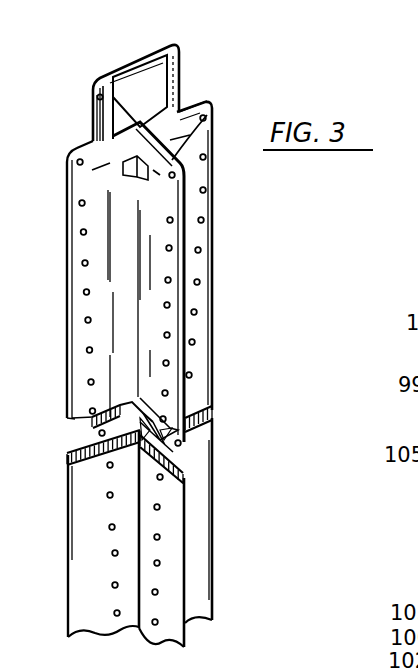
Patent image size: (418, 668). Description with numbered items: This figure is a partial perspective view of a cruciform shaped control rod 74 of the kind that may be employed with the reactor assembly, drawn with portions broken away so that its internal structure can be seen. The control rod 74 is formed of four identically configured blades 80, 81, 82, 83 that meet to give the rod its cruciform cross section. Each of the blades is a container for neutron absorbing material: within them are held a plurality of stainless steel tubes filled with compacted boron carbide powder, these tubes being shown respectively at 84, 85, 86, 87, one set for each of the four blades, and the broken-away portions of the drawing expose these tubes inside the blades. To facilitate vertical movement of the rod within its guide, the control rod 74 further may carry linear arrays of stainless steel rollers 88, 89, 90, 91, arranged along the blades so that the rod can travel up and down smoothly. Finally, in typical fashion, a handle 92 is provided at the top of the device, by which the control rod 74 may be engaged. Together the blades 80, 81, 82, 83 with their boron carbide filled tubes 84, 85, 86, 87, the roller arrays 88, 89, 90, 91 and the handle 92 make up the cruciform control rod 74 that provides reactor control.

The cruciform control rod 74 is at (257, 267).
The blade 80 is at (205, 119).
The blade 81 is at (83, 191).
The blade 82 is at (97, 115).
The blade 83 is at (190, 100).
The compacted boron carbide powder filled stainless steel tubes 84 is at (184, 474).
The compacted boron carbide powder filled stainless steel tubes 85 is at (68, 458).
The compacted boron carbide powder filled stainless steel tubes 86 is at (83, 427).
The compacted boron carbide powder filled stainless steel tubes 87 is at (213, 408).
The linear array of stainless steel rollers 88 is at (173, 225).
The linear array of stainless steel rollers 89 is at (78, 264).
The linear array of stainless steel rollers 90 is at (97, 438).
The linear array of stainless steel rollers 91 is at (198, 312).
The handle 92 is at (150, 58).